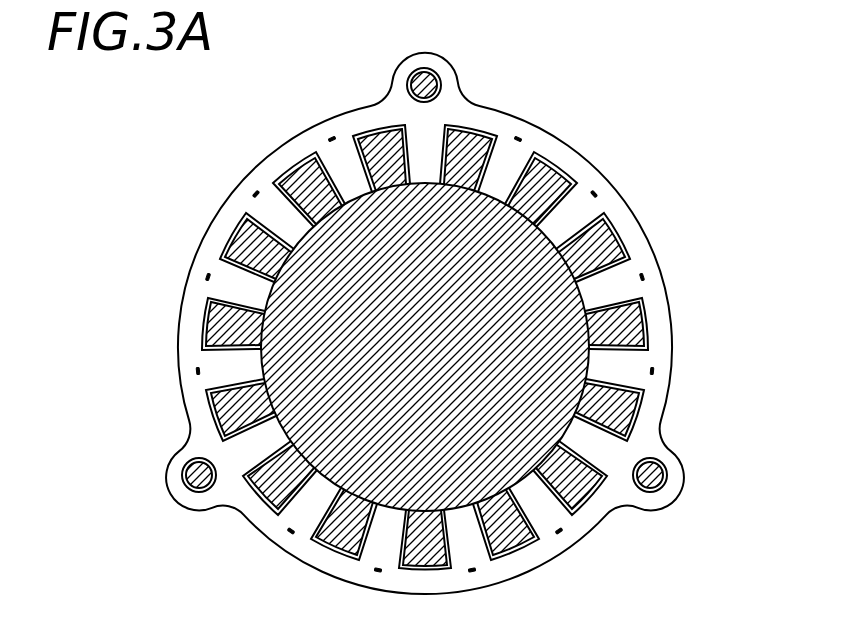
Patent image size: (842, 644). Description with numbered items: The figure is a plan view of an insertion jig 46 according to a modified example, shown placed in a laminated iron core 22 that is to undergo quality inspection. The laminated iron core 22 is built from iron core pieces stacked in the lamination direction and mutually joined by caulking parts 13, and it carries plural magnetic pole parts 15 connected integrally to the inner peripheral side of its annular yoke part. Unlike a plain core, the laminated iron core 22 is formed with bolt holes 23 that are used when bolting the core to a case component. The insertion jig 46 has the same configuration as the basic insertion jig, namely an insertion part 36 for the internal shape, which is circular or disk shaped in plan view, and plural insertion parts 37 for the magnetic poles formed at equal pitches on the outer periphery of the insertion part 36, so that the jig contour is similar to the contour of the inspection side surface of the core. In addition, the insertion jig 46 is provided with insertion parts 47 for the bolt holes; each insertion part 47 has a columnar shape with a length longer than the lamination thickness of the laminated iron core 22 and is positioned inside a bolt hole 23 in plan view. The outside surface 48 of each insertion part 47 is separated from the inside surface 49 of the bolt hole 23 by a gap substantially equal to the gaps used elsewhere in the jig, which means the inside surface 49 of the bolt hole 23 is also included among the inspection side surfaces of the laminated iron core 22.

The caulking part 13 is at (650, 273).
The magnetic pole part 15 is at (541, 515).
The laminated iron core 22 is at (566, 112).
The bolt hole 23 is at (438, 83).
The insertion part for internal shape 36 is at (583, 190).
The insertion part for magnetic pole 37 is at (297, 177).
The insertion jig 46 is at (238, 237).
The insertion part for bolt hole 47 is at (410, 74).
The outside surface 48 is at (186, 464).
The inside surface 49 is at (196, 493).